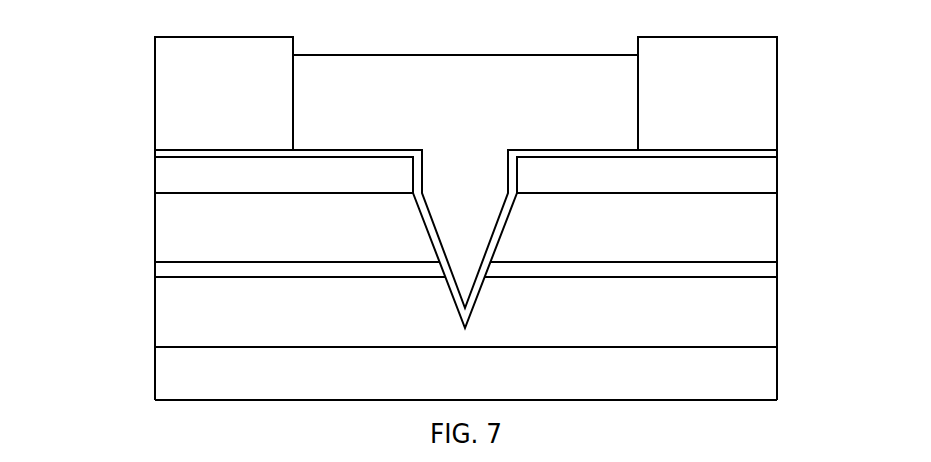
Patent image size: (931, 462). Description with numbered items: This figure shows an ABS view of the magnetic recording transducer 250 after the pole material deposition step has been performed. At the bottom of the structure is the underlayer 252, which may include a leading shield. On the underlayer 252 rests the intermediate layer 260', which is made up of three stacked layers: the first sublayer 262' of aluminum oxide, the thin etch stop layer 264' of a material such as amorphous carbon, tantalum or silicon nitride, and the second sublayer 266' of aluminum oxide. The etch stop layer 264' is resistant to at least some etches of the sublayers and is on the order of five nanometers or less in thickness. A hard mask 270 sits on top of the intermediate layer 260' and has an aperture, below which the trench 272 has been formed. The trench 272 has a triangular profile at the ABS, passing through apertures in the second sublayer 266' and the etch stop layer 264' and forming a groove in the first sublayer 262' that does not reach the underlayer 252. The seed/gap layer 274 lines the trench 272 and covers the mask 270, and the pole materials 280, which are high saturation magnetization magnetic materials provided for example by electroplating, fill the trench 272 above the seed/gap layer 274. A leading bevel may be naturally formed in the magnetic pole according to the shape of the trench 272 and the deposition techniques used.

The transducer 250 is at (487, 32).
The underlayer 252 is at (466, 367).
The intermediate layer 260' is at (124, 239).
The first sublayer 262' is at (466, 302).
The etch stop layer 264' is at (497, 295).
The second sublayer 266' is at (467, 227).
The mask 270 is at (466, 242).
The trench 272 is at (450, 163).
The seed/gap layer 274 is at (777, 155).
The pole materials 280 is at (465, 95).